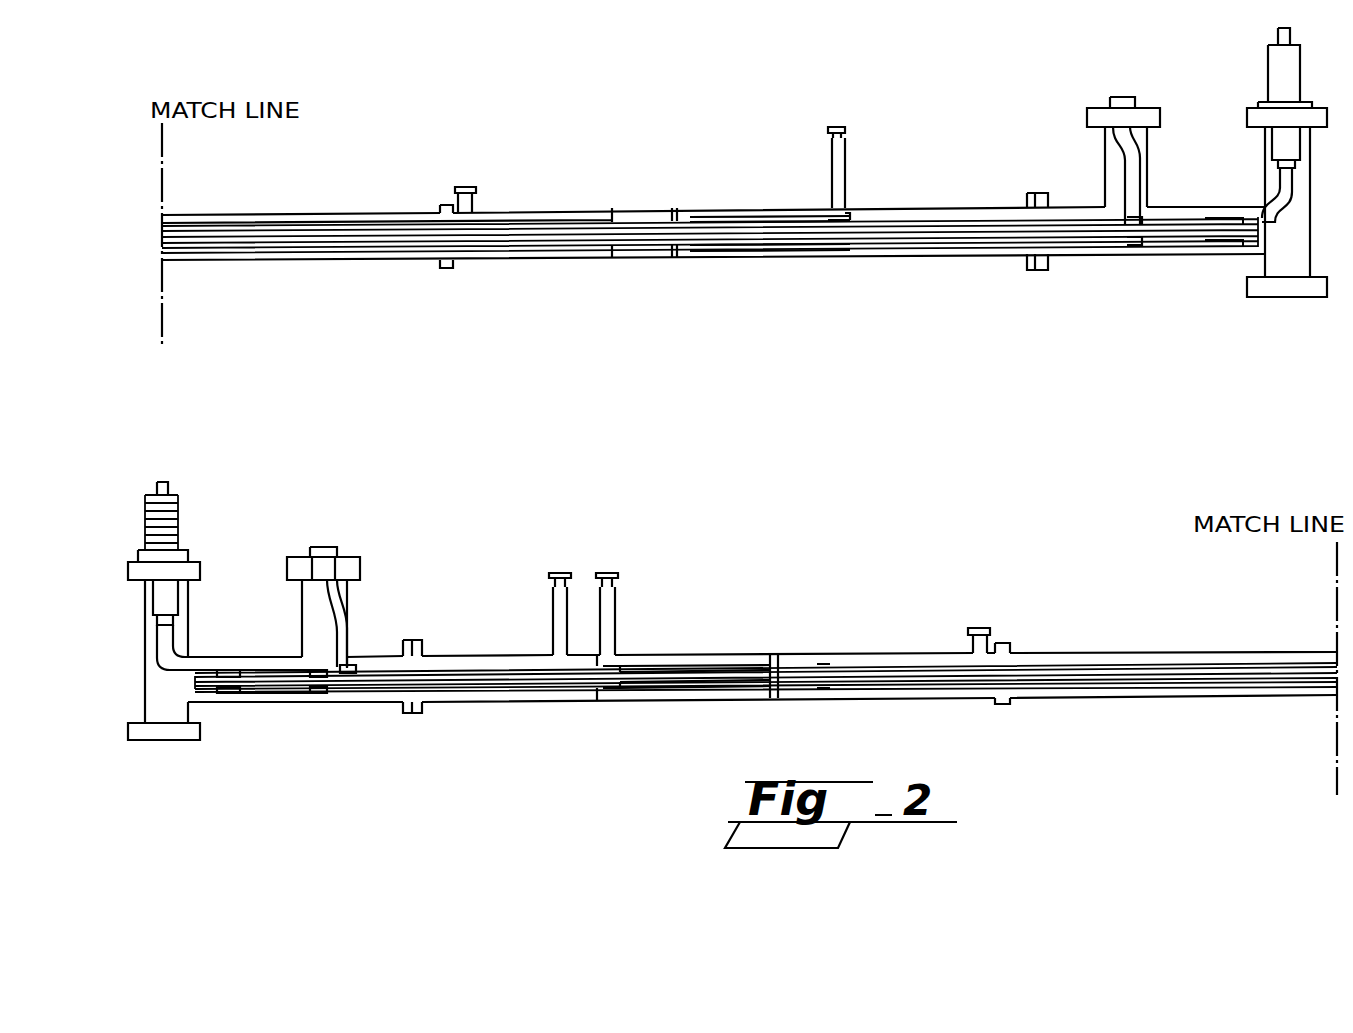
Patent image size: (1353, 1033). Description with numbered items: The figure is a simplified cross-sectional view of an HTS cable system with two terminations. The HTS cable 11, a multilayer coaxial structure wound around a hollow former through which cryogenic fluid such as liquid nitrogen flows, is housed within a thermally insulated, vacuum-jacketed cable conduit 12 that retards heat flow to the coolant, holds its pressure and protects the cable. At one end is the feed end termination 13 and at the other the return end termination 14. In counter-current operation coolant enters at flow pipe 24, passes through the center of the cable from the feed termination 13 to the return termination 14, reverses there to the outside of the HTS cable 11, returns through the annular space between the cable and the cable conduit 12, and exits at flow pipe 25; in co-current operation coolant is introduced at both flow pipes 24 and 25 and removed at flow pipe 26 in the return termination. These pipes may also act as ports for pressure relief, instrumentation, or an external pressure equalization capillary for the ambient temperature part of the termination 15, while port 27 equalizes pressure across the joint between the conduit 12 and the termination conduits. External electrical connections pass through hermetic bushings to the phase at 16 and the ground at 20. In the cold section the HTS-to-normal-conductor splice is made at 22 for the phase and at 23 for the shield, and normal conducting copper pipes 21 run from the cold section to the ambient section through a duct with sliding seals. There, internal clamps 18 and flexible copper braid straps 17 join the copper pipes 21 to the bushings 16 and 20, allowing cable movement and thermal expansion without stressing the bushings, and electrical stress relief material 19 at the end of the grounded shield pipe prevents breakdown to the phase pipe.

The HTS cable 11 is at (1285, 663).
The cable conduit 12 is at (327, 213).
The feed end termination 13 is at (455, 702).
The return end termination 14 is at (953, 205).
The ambient temperature part of the termination 15 is at (145, 685).
The hermetic bushing for the phase 16 is at (165, 480).
The copper braid straps 17 is at (157, 653).
The internal clamps 18 is at (230, 692).
The electrical stress relief material 19 is at (278, 667).
The hermetic bushing for the ground 20 is at (323, 545).
The copper pipes 21 is at (347, 653).
The phase splice 22 is at (678, 667).
The shield splice 23 is at (790, 663).
The flow pipe 24 is at (606, 572).
The flow pipe 25 is at (558, 572).
The flow pipe 26 is at (830, 128).
The port 27 is at (978, 628).